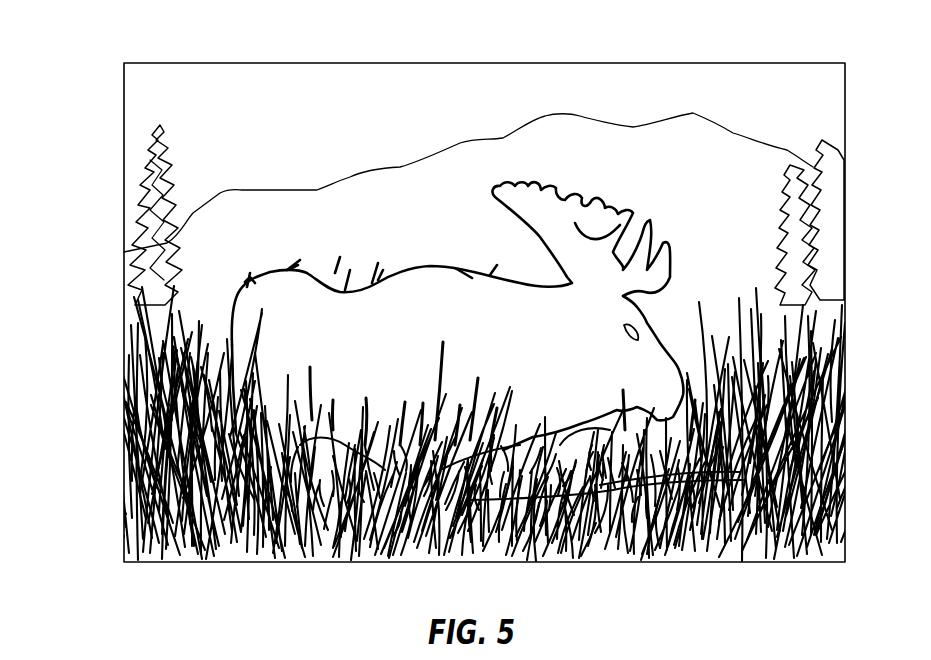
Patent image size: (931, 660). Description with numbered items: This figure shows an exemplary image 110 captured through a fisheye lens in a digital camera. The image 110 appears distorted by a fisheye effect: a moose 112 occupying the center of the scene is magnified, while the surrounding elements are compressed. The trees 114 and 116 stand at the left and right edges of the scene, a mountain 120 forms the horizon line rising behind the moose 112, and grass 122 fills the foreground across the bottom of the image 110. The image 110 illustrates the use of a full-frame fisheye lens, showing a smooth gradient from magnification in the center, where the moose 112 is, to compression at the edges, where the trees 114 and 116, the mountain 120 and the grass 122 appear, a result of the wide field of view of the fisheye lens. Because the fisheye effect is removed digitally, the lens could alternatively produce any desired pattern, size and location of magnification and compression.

The image 110 is at (704, 50).
The moose 112 is at (416, 266).
The tree 114 is at (170, 140).
The tree 116 is at (815, 140).
The mountain 120 is at (302, 190).
The grass 122 is at (108, 520).